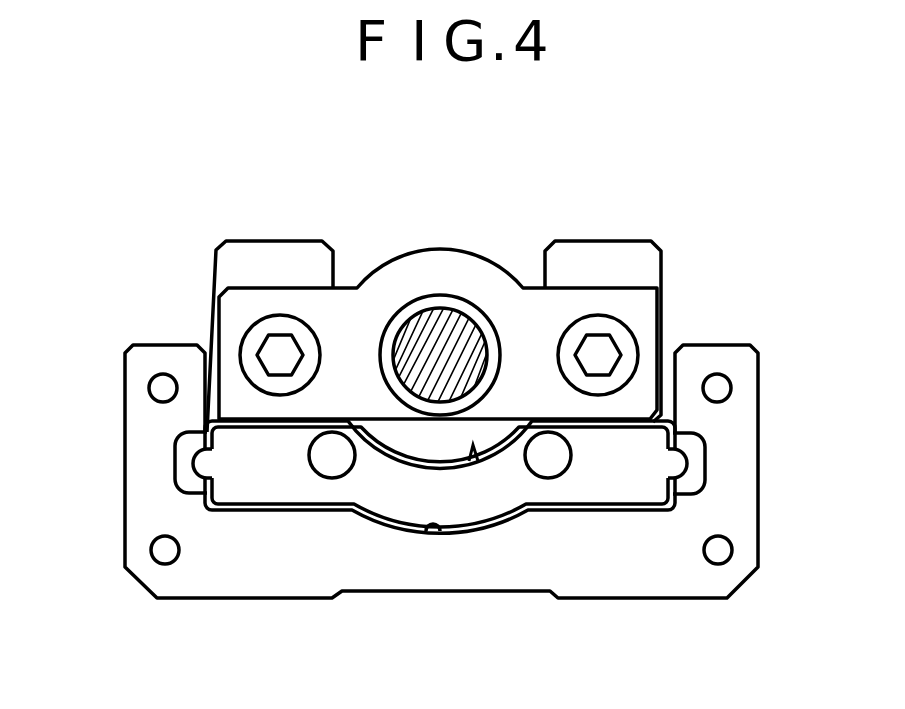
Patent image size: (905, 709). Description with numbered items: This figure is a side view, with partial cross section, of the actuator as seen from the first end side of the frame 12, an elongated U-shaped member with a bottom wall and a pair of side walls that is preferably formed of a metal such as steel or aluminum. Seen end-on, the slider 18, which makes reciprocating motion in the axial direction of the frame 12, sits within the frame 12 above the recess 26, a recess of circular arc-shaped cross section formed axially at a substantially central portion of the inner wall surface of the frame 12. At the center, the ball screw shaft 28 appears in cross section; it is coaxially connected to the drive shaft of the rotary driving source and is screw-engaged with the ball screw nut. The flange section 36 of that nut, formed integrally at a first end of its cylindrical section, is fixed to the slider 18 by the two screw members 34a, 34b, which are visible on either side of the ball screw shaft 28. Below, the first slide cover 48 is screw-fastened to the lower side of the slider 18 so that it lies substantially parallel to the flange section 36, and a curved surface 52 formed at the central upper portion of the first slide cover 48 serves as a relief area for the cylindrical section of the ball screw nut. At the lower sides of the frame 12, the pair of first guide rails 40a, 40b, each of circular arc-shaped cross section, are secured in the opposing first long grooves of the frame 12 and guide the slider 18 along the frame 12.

The frame 12 is at (630, 582).
The slider 18 is at (607, 262).
The recess 26 is at (440, 533).
The ball screw shaft 28 is at (440, 330).
The screw member 34a is at (280, 350).
The screw member 34b is at (600, 355).
The flange section 36 is at (493, 277).
The first guide rail 40a is at (182, 459).
The first guide rail 40b is at (700, 462).
The first slide cover 48 is at (390, 498).
The curved surface 52 is at (474, 461).